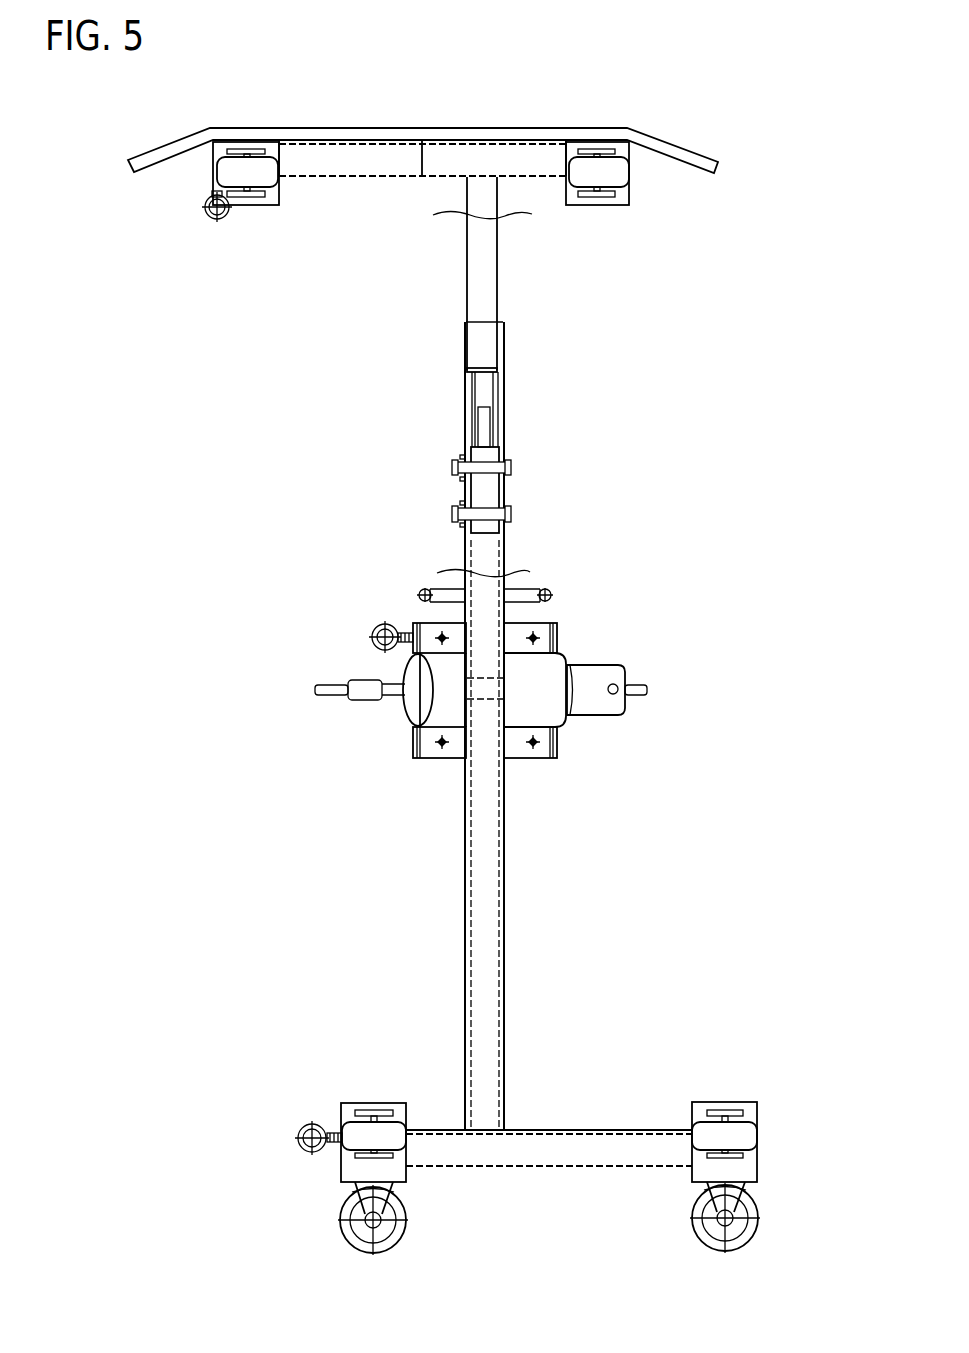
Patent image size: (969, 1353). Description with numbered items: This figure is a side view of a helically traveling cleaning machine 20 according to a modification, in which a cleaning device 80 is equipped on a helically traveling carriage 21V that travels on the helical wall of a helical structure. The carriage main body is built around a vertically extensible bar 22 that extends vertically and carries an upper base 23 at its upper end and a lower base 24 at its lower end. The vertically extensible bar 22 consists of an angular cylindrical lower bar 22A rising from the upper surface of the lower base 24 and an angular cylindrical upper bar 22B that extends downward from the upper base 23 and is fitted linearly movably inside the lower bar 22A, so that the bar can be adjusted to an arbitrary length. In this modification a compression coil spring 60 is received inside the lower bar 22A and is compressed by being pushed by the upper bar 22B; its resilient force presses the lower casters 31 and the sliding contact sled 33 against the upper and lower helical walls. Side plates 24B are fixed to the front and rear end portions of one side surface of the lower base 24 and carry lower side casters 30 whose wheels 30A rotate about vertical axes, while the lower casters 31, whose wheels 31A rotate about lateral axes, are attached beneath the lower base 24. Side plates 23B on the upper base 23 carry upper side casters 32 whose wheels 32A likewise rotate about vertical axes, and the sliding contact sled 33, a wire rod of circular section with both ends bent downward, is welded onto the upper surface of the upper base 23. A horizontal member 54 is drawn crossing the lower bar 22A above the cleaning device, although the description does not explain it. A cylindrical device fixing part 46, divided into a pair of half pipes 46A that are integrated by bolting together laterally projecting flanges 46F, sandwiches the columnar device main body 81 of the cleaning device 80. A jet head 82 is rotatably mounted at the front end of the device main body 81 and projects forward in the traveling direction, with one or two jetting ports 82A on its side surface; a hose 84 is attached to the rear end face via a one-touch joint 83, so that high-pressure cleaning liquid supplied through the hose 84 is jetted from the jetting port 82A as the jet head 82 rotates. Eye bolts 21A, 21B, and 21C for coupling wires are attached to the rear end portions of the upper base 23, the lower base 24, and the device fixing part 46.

The helically traveling cleaning machine 20 is at (723, 295).
The eye bolt 21A is at (215, 220).
The eye bolt 21B is at (298, 1138).
The eye bolt 21C is at (372, 633).
The helically traveling carriage 21V is at (518, 378).
The vertically extensible bar 22 is at (362, 303).
The lower bar 22A is at (467, 370).
The upper bar 22B is at (463, 296).
The upper base 23 is at (375, 178).
The side plate 23B is at (271, 206).
The lower base 24 is at (557, 1128).
The side plate 24B is at (400, 1110).
The lower side caster 30 is at (377, 1101).
The wheel 30A is at (353, 1120).
The lower caster 31 is at (418, 1207).
The wheel 31A is at (395, 1245).
The upper side caster 32 is at (250, 137).
The wheel 32A is at (258, 167).
The sliding contact sled 33 is at (374, 128).
The device fixing part 46 is at (543, 700).
The half pipe 46A is at (425, 718).
The flange 46F is at (555, 622).
The stopper bar 54 is at (527, 587).
The compression coil spring 60 is at (492, 412).
The cleaning device 80 is at (596, 653).
The device main body 81 is at (405, 662).
The jet head 82 is at (615, 665).
The jetting port 82A is at (618, 687).
The one-touch joint 83 is at (362, 703).
The hose 84 is at (326, 700).